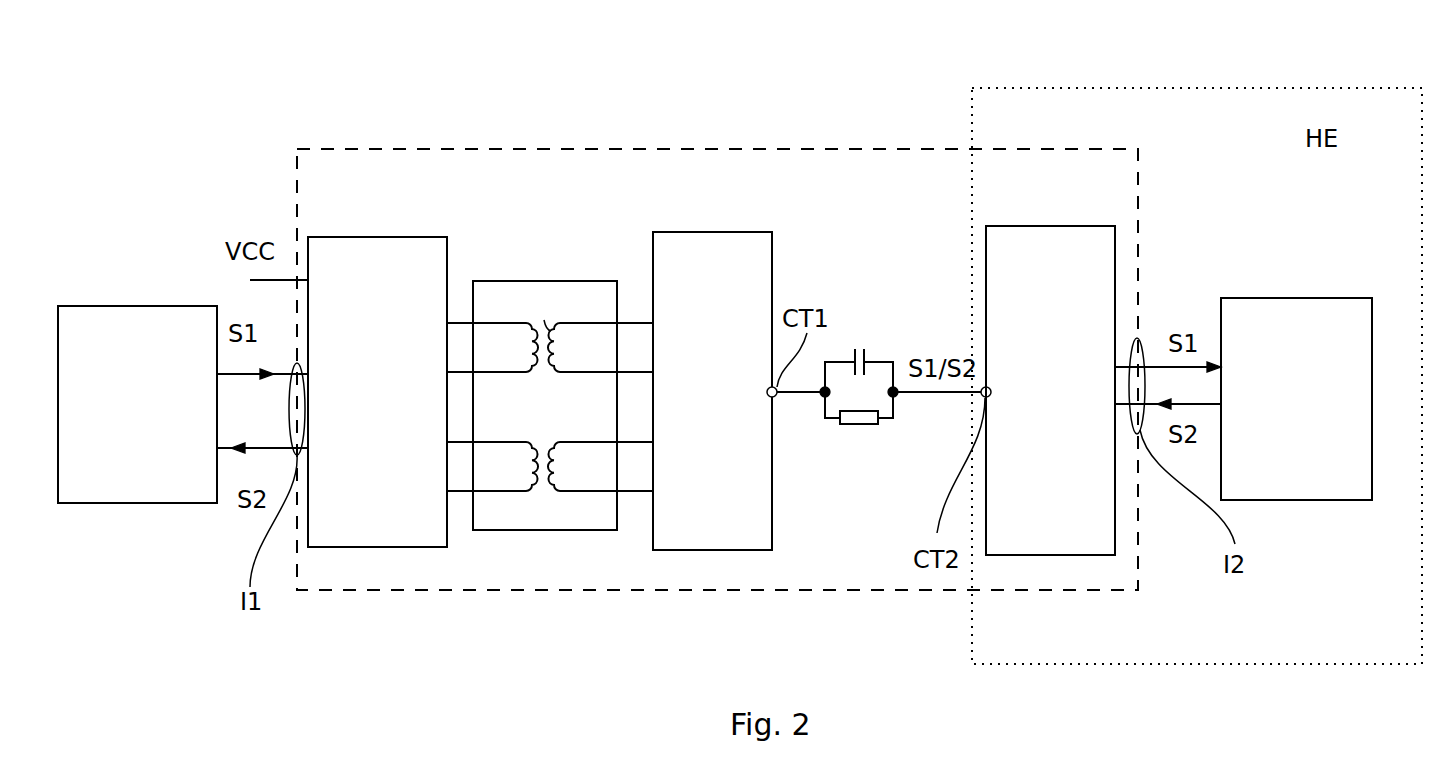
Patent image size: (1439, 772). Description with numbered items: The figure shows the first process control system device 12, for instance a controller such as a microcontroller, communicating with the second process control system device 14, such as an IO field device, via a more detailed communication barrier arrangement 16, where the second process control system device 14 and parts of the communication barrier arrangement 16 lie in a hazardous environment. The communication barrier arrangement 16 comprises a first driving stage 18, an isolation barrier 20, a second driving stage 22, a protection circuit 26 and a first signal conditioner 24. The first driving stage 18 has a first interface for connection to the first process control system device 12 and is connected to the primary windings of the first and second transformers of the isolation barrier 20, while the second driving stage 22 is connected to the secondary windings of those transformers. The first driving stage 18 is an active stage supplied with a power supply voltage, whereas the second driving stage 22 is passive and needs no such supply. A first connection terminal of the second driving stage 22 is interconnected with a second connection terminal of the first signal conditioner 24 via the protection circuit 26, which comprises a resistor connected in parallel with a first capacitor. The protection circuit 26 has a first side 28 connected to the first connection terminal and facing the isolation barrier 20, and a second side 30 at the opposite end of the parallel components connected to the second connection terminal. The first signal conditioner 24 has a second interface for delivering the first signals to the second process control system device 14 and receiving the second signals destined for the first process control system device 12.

The first process control system device 12 is at (123, 432).
The second process control system device 14 is at (1282, 433).
The communication barrier arrangement 16 is at (785, 150).
The first driving stage 18 is at (364, 429).
The isolation barrier 20 is at (545, 283).
The second driving stage 22 is at (694, 416).
The first signal conditioner 24 is at (1043, 414).
The protection circuit 26 is at (889, 319).
The first side 28 is at (825, 400).
The second side 30 is at (897, 385).